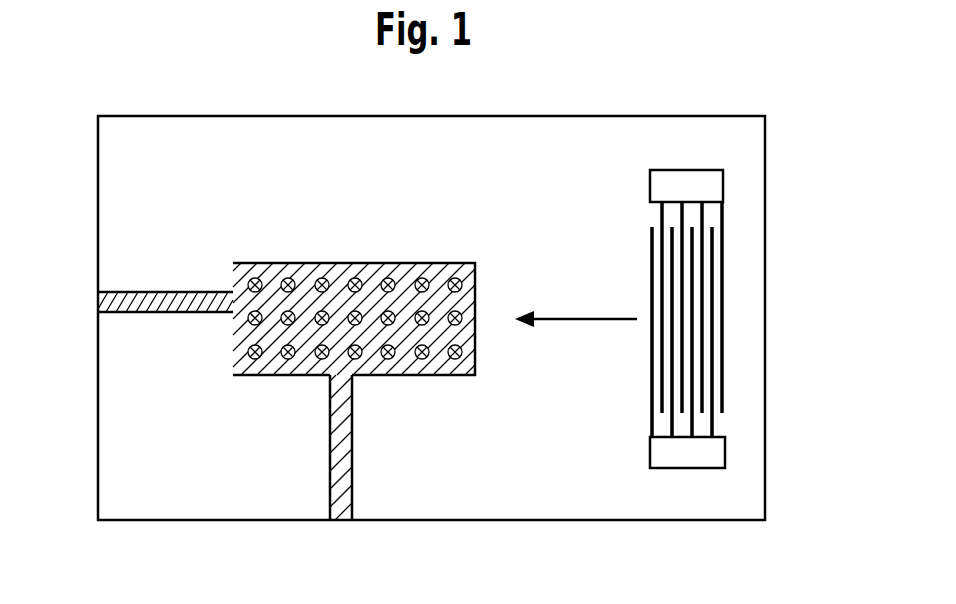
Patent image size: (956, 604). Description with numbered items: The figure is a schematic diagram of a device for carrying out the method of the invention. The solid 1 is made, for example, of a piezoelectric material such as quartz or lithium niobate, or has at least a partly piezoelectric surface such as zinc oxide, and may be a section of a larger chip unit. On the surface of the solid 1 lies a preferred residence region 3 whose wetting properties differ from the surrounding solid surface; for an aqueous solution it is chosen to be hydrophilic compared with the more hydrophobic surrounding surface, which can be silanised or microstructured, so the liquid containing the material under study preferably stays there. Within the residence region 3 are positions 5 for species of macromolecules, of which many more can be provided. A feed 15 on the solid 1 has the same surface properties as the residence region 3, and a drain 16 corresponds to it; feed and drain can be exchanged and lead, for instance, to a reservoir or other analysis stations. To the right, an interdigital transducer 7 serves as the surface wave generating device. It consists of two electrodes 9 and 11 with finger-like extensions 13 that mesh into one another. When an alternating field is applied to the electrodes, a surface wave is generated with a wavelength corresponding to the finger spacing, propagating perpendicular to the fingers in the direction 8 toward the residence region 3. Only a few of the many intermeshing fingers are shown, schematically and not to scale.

The solid 1 is at (118, 138).
The preferred residence region 3 is at (299, 250).
The position for a species of macromolecules 5 is at (448, 285).
The interdigital transducer 7 is at (732, 301).
The direction of propagation 8 is at (573, 319).
The electrode 9 is at (714, 183).
The electrode 11 is at (717, 455).
The finger-like extensions 13 is at (725, 368).
The feed 15 is at (345, 490).
The drain 16 is at (137, 304).